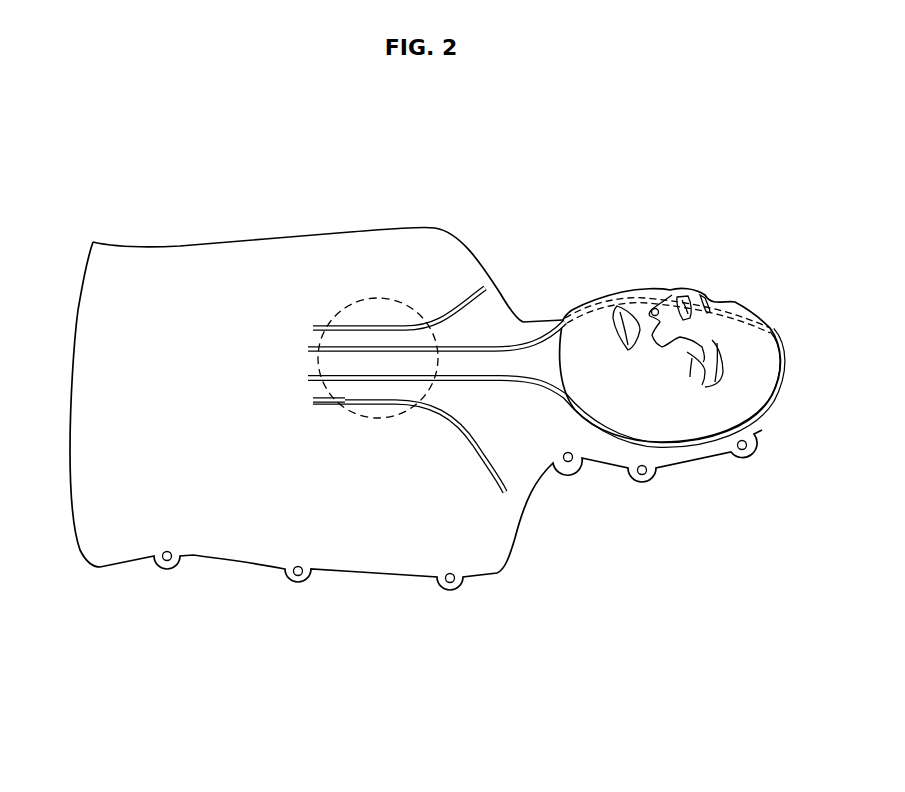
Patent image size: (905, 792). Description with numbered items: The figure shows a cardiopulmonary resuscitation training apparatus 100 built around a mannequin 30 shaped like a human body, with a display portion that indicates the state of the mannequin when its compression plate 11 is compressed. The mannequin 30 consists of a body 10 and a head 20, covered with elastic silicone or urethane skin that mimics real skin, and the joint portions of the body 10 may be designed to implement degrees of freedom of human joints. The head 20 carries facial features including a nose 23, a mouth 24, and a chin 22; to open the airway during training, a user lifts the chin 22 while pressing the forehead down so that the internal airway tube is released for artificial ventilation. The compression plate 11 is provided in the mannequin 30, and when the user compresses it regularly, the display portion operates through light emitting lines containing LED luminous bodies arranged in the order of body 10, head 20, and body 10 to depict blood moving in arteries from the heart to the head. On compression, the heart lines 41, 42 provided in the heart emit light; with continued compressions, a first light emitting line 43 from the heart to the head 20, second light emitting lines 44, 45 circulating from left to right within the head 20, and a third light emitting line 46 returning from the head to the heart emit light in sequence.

The cardiopulmonary resuscitation training apparatus 100 is at (405, 115).
The mannequin 30 is at (628, 682).
The body 10 is at (478, 577).
The head 20 is at (612, 470).
The compression plate 11 is at (385, 298).
The chin 22 is at (588, 330).
The nose 23 is at (664, 320).
The mouth 24 is at (628, 306).
The heart line 41 is at (462, 312).
The heart line 42 is at (428, 413).
The first light emitting line 43 is at (516, 343).
The second light emitting line 44 is at (742, 307).
The second light emitting line 45 is at (687, 447).
The third light emitting line 46 is at (343, 400).